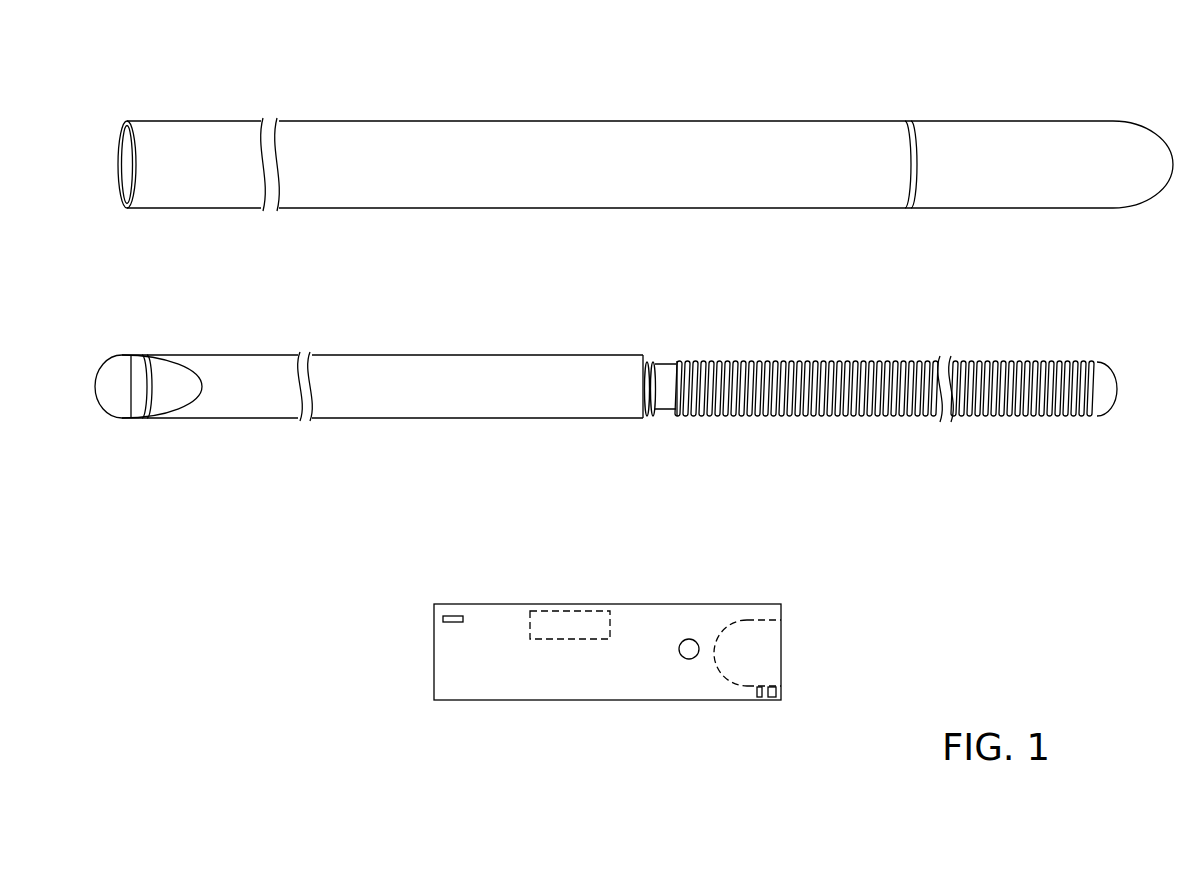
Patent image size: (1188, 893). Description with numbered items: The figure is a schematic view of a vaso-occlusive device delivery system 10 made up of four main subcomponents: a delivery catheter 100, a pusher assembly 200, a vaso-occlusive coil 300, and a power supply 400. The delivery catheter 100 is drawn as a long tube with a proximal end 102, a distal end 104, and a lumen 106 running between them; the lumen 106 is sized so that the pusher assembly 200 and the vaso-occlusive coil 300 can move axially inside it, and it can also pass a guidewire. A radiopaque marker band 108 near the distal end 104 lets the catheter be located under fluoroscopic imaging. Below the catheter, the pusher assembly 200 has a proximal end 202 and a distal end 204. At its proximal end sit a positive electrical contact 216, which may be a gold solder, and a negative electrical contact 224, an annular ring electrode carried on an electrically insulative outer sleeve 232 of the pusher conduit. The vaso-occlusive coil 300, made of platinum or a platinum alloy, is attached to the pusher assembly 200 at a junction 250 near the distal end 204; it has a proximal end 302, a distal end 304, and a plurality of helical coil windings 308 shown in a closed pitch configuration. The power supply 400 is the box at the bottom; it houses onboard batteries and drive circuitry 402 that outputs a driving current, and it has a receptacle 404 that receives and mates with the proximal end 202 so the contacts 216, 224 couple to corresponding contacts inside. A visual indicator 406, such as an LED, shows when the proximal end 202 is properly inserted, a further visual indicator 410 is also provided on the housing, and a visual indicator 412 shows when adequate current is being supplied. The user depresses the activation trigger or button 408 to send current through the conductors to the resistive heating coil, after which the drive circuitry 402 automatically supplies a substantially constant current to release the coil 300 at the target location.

The vaso-occlusive device delivery system 10 is at (802, 529).
The delivery catheter 100 is at (615, 111).
The proximal end 102 is at (194, 121).
The distal end 104 is at (1032, 121).
The lumen 106 is at (119, 164).
The marker band 108 is at (908, 122).
The pusher assembly 200 is at (383, 396).
The proximal end 202 is at (131, 355).
The distal end 204 is at (642, 355).
The positive electrical contact 216 is at (112, 405).
The negative electrical contact 224 is at (146, 408).
The electrically insulative outer sleeve 232 is at (432, 355).
The junction 250 is at (645, 428).
The vaso-occlusive coil 300 is at (912, 401).
The proximal end 302 is at (681, 355).
The distal end 304 is at (1096, 362).
The coil windings 308 is at (889, 418).
The power supply 400 is at (638, 676).
The drive circuitry 402 is at (550, 611).
The receptacle 404 is at (765, 640).
The visual indicator 406 is at (777, 690).
The activation trigger or button 408 is at (686, 639).
The indicator 410 is at (452, 615).
The visual indicator 412 is at (761, 698).